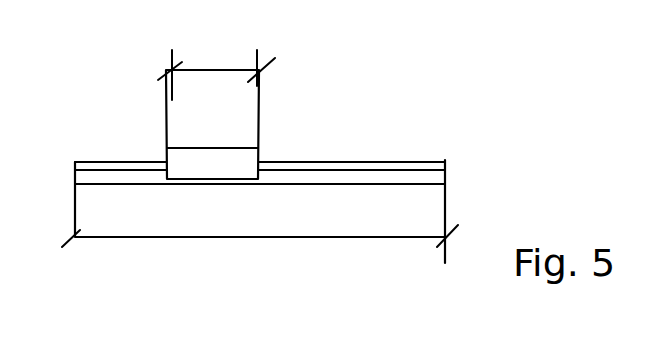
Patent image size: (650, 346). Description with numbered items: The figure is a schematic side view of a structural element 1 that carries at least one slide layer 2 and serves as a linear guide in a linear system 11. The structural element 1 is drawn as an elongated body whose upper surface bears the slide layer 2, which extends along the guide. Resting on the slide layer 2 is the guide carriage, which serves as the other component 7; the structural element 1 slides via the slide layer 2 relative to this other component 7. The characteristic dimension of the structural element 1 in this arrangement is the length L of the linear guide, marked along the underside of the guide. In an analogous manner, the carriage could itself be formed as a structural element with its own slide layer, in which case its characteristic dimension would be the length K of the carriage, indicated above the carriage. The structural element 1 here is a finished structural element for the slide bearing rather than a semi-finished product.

The structural element 1 is at (376, 186).
The slide layer 2 is at (398, 164).
The other component 7 is at (210, 167).
The linear system 11 is at (374, 124).
The length of the carriage K is at (212, 69).
The length of the linear guide L is at (233, 238).